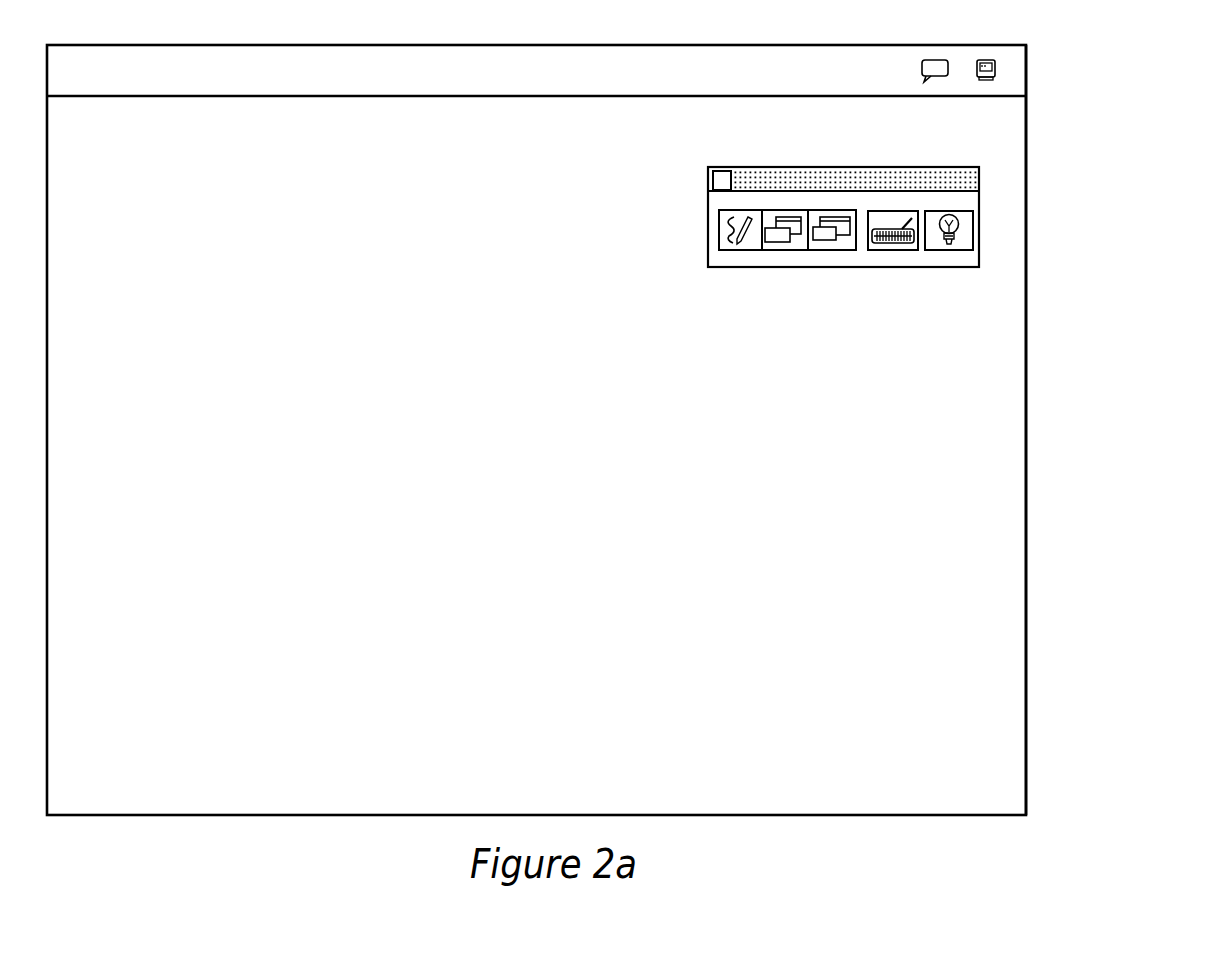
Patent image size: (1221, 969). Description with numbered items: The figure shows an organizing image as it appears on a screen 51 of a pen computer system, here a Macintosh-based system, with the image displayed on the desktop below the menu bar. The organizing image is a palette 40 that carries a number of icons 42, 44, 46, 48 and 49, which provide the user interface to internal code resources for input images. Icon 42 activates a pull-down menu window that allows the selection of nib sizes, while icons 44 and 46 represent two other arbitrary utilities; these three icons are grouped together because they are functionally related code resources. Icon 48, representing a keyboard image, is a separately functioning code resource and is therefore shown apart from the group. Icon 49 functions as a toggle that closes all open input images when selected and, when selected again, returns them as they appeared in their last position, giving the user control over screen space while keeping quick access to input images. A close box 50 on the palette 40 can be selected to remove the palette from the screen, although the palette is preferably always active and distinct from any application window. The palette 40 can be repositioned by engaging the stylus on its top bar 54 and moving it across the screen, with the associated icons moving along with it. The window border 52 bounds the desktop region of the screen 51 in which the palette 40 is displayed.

The tool palette window 40 is at (709, 199).
The pen/drawing tool icon 42 is at (724, 247).
The bring-to-front tool icon 44 is at (764, 247).
The send-to-back tool icon 46 is at (827, 247).
The keyboard tool icon 48 is at (889, 248).
The light bulb (hint) tool icon 49 is at (938, 248).
The close box 50 is at (722, 172).
The display screen 51 is at (1104, 97).
The window border 52 is at (1027, 158).
The palette title bar 54 is at (975, 181).